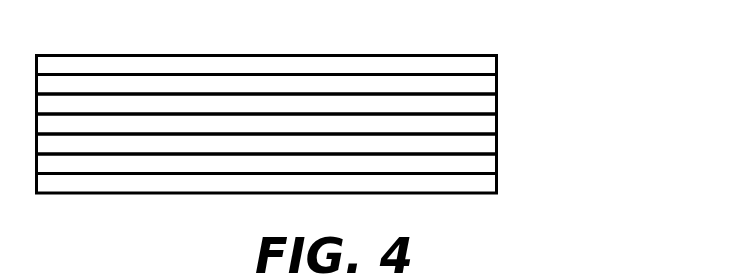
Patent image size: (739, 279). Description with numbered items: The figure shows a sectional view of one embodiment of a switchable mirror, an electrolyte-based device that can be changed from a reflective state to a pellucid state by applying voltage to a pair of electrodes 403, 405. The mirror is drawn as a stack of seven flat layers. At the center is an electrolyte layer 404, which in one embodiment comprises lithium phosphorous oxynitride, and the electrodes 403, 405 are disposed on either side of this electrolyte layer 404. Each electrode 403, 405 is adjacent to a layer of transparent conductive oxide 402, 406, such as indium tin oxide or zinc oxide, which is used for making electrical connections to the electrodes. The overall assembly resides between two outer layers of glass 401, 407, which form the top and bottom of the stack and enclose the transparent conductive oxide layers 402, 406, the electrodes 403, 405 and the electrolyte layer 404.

The layer of glass 401 is at (497, 64).
The layer of transparent conductive oxide 402 is at (497, 78).
The electrode 403 is at (497, 105).
The electrolyte layer 404 is at (497, 126).
The electrode 405 is at (497, 145).
The layer of transparent conductive oxide 406 is at (497, 162).
The layer of glass 407 is at (497, 181).